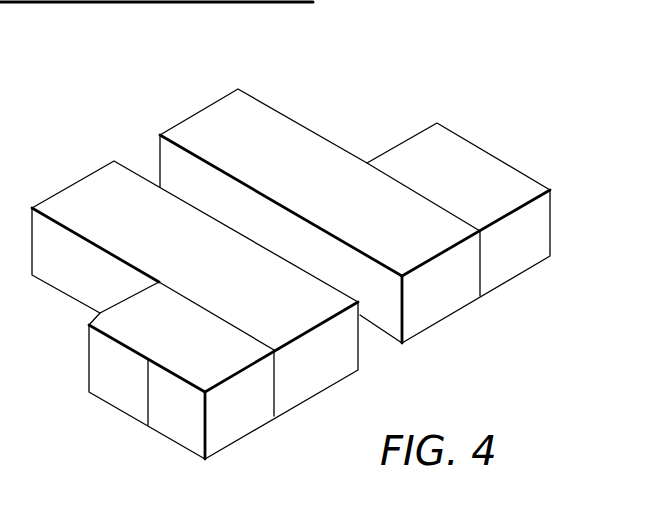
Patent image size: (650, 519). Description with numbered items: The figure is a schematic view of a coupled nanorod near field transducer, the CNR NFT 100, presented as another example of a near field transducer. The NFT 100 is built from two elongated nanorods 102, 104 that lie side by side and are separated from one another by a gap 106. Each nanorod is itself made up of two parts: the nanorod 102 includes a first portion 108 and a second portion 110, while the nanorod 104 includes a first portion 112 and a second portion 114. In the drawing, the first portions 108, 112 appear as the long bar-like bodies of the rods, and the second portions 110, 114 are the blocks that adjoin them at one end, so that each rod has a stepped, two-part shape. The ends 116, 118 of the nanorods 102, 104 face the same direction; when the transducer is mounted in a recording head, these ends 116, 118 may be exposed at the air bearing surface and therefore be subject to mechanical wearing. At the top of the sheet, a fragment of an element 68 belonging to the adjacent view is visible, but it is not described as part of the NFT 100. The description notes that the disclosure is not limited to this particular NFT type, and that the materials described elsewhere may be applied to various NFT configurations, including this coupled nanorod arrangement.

The support plate 68 is at (268, 1).
The coupled nanorod NFT 100 is at (452, 75).
The nanorod 102 is at (87, 200).
The nanorod 104 is at (205, 130).
The gap 106 is at (373, 350).
The first portion 108 is at (123, 238).
The second portion 110 is at (173, 420).
The first portion 112 is at (327, 165).
The second portion 114 is at (465, 165).
The end 116 is at (303, 380).
The end 118 is at (448, 302).